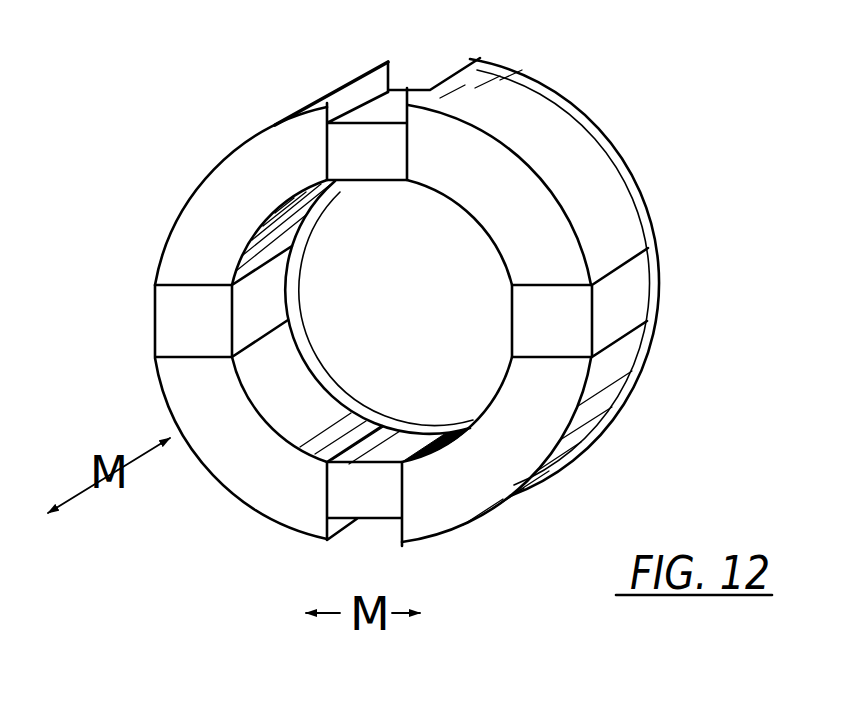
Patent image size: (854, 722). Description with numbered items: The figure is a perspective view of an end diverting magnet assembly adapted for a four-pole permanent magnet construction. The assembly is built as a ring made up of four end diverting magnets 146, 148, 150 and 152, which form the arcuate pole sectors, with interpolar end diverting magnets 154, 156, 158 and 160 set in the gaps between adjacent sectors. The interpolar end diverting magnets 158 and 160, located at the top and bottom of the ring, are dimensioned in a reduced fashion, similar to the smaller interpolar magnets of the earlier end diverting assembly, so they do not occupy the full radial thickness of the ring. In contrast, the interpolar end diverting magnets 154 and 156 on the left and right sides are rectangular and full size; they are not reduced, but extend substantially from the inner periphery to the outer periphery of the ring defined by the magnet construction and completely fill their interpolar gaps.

The end diverting magnet 146 is at (540, 210).
The end diverting magnet 148 is at (483, 484).
The end diverting magnet 150 is at (164, 402).
The end diverting magnet 152 is at (225, 152).
The interpolar end diverting magnet 154 is at (622, 294).
The interpolar end diverting magnet 156 is at (152, 314).
The interpolar end diverting magnet 158 is at (374, 121).
The interpolar end diverting magnet 160 is at (387, 528).